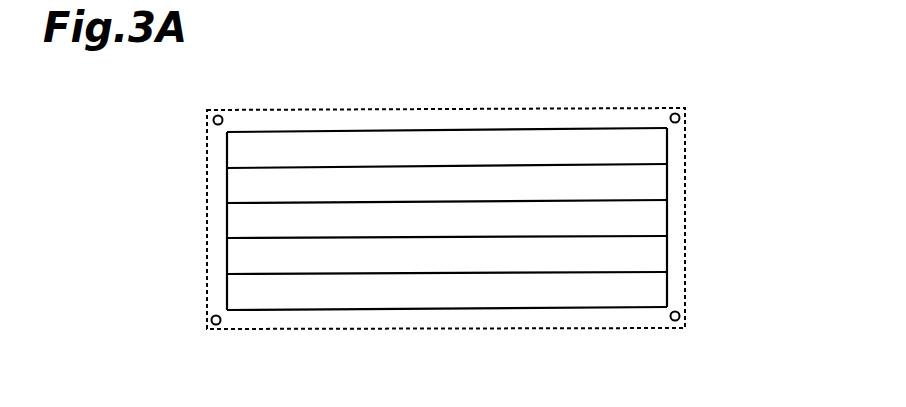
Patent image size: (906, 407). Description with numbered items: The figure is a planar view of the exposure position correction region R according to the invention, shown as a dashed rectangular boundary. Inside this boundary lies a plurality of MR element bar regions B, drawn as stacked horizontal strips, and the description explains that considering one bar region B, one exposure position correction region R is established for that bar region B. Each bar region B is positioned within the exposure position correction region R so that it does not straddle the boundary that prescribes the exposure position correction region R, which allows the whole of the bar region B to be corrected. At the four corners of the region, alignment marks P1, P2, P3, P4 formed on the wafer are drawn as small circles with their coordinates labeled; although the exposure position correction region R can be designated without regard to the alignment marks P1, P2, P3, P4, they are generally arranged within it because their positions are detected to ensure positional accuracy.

The alignment mark P1 is at (218, 115).
The alignment mark P2 is at (675, 113).
The alignment mark P3 is at (216, 325).
The alignment mark P4 is at (675, 321).
The exposure position correction region R is at (497, 106).
The bar region B is at (648, 160).